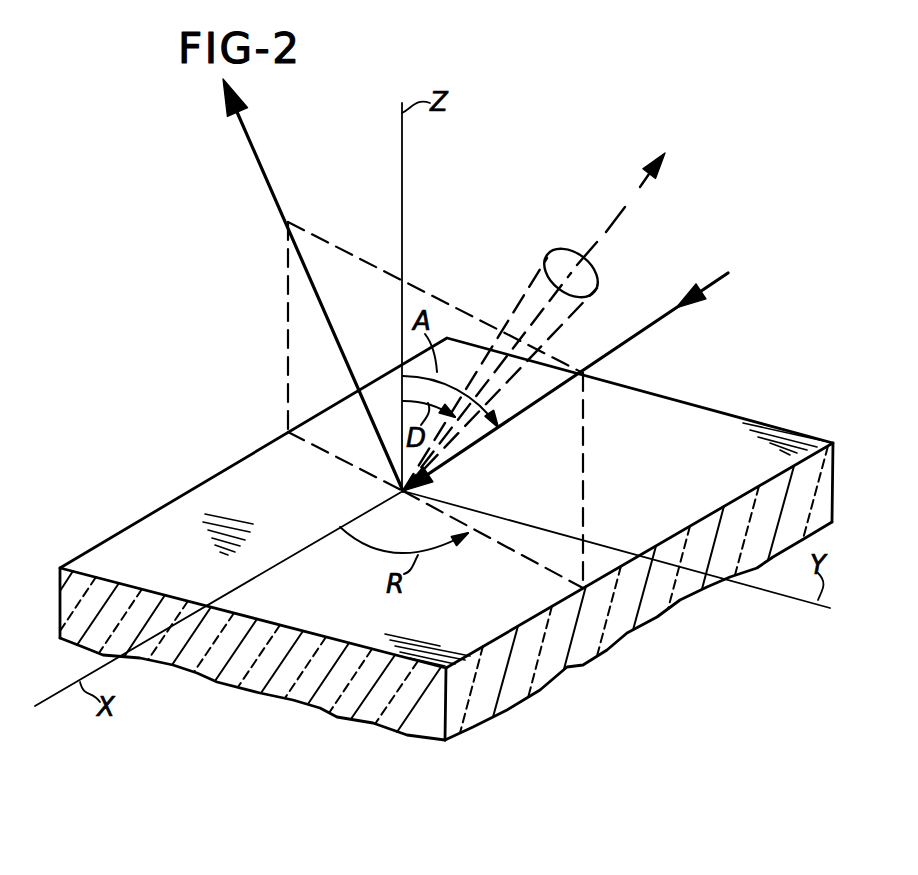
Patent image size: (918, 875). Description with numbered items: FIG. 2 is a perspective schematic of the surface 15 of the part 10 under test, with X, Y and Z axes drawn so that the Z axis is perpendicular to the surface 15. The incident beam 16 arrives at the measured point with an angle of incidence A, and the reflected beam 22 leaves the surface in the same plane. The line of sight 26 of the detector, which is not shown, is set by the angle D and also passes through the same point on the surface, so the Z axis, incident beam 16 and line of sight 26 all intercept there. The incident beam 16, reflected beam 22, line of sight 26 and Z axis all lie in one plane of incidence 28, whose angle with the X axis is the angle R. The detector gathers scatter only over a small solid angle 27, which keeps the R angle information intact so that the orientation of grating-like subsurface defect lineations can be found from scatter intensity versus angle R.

The part under test 10 is at (668, 598).
The surface 15 is at (770, 430).
The incident beam 16 is at (714, 280).
The reflected beam 22 is at (300, 259).
The detector line of sight 26 is at (620, 207).
The solid angle 27 is at (532, 272).
The plane of incidence 28 is at (584, 466).